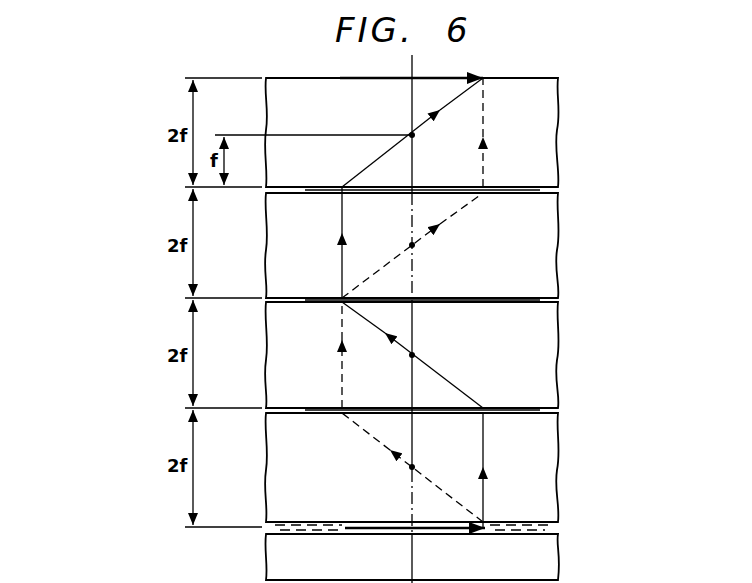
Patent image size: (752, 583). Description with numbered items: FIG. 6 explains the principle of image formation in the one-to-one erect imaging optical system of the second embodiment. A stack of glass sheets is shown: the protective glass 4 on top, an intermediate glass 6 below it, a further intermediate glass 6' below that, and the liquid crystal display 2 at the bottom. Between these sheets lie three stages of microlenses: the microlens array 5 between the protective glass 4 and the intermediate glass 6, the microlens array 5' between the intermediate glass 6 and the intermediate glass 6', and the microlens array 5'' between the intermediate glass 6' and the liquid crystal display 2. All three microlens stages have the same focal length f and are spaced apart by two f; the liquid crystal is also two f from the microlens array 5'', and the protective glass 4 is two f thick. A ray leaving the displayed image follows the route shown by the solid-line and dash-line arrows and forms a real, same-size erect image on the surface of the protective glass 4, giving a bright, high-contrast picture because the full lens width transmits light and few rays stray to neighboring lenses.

The protective glass 4 is at (560, 137).
The microlens array 5 is at (468, 204).
The intermediate glass 6 is at (448, 242).
The microlens array 5' is at (471, 314).
The intermediate glass 6' is at (451, 355).
The microlens array 5'' is at (474, 397).
The liquid crystal display 2 is at (580, 413).